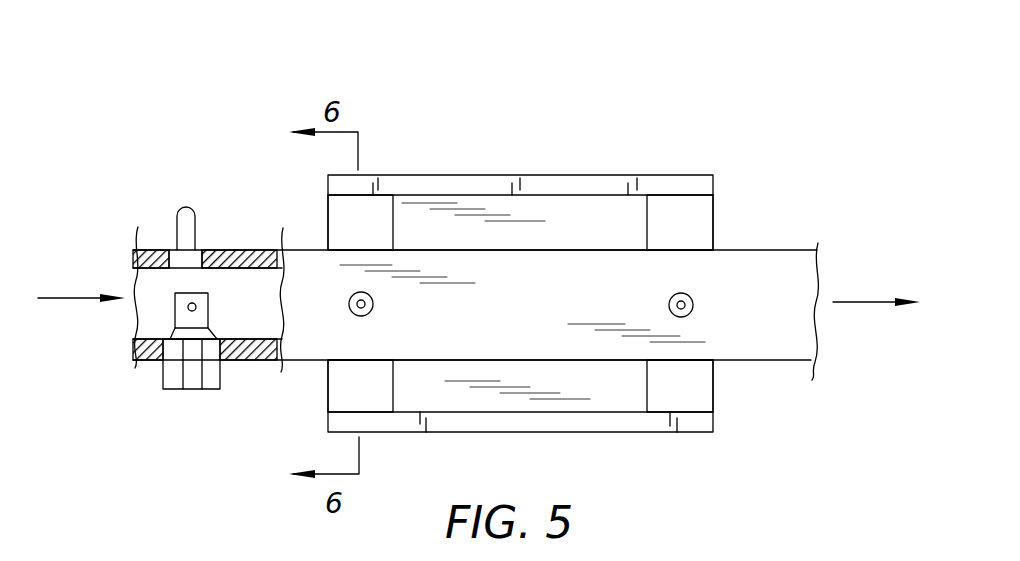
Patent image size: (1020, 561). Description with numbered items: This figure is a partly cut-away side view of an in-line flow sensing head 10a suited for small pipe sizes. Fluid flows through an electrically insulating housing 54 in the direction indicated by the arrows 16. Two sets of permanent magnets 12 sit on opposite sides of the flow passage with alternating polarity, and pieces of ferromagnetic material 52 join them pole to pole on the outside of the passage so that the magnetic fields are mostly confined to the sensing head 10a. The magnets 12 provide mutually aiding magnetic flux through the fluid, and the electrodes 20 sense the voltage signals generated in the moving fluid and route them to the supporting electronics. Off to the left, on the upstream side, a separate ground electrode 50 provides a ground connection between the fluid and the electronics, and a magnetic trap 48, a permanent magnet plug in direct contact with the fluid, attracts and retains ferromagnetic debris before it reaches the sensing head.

The sensing head 10a is at (735, 120).
The magnets 12 is at (387, 389).
The fluid flow direction 16 is at (62, 298).
The electrode 20 is at (372, 299).
The magnetic trap 48 is at (193, 389).
The ground electrode 50 is at (196, 226).
The pieces of ferromagnetic material 52 is at (533, 175).
The electrically insulating housing 54 is at (760, 250).